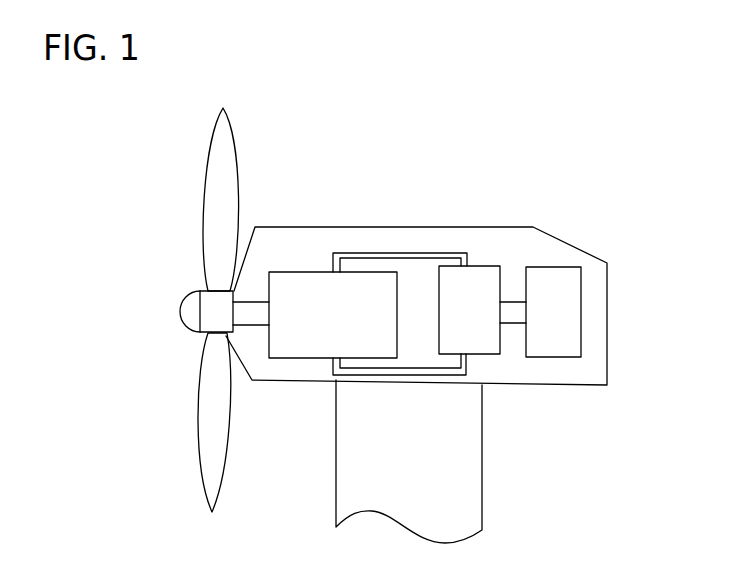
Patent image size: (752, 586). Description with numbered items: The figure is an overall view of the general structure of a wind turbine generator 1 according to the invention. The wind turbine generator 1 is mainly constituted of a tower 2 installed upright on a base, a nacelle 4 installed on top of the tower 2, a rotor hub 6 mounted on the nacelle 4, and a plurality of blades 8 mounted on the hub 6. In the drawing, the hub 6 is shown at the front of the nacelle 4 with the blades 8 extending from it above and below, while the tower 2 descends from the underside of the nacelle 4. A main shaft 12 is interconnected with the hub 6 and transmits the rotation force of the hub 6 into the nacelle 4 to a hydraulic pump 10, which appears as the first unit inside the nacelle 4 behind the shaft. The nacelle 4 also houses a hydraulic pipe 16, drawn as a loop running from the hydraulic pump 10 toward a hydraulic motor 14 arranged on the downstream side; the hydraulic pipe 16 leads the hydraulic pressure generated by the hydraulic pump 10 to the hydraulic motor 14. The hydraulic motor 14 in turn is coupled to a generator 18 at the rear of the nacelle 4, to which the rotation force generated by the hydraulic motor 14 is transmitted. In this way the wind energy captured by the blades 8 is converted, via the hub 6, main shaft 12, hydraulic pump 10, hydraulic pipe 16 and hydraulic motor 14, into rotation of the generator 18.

The wind turbine generator 1 is at (528, 186).
The tower 2 is at (482, 478).
The nacelle 4 is at (380, 227).
The rotor hub 6 is at (182, 318).
The blades 8 is at (200, 490).
The hydraulic pump 10 is at (292, 358).
The main shaft 12 is at (250, 302).
The hydraulic motor 14 is at (483, 355).
The hydraulic pipe 16 is at (434, 253).
The generator 18 is at (582, 307).